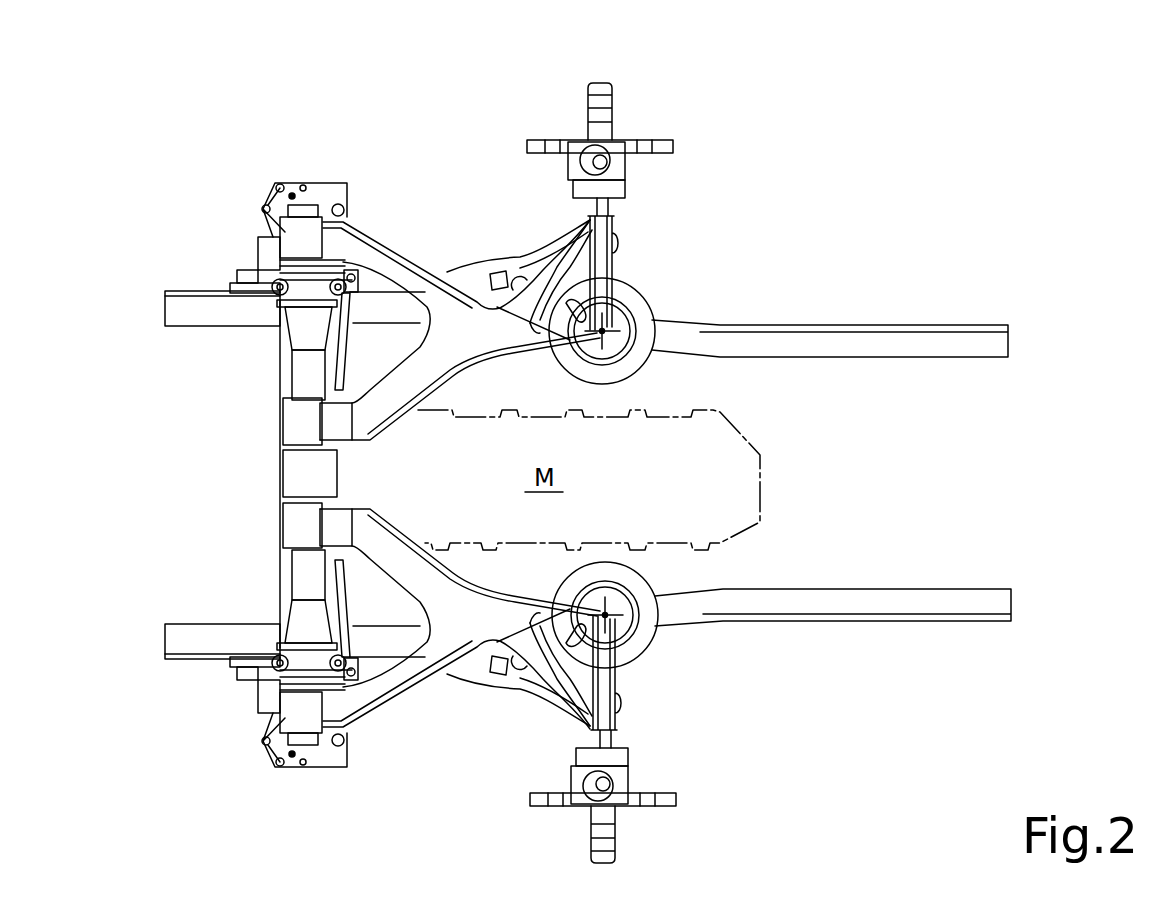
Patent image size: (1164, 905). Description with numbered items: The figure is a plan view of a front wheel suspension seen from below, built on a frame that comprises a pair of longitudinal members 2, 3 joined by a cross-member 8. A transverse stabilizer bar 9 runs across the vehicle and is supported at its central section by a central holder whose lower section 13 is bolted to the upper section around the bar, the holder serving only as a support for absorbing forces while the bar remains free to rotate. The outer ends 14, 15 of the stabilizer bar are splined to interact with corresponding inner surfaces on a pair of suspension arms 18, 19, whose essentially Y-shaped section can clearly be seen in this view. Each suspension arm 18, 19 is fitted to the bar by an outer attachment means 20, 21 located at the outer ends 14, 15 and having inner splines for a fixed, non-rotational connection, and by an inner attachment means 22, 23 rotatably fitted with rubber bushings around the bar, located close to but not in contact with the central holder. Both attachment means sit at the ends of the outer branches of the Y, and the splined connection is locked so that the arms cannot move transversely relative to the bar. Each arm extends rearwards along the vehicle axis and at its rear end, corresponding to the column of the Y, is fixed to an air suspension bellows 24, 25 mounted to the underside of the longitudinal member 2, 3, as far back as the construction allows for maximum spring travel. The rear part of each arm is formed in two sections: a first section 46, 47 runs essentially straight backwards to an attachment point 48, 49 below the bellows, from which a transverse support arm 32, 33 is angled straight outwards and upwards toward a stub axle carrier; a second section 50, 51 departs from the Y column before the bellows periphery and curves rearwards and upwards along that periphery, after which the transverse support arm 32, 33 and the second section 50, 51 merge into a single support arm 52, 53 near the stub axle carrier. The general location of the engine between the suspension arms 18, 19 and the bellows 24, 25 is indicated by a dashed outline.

The longitudinal member 2 is at (950, 600).
The longitudinal member 3 is at (948, 340).
The cross-member 8 is at (287, 358).
The transverse stabilizer bar 9 is at (293, 378).
The lower section of central holder 13 is at (293, 473).
The outer end of stabilizer bar 14 is at (307, 763).
The outer end of stabilizer bar 15 is at (293, 185).
The suspension arm 18 is at (481, 627).
The suspension arm 19 is at (481, 345).
The outer attachment means 20 is at (293, 708).
The outer attachment means 21 is at (290, 243).
The inner attachment means 22 is at (293, 523).
The inner attachment means 23 is at (293, 423).
The air suspension bellows 24 is at (650, 630).
The air suspension bellows 25 is at (650, 318).
The transverse support arm 32 is at (612, 660).
The transverse support arm 33 is at (612, 290).
The first section 46 is at (540, 607).
The first section 47 is at (543, 333).
The attachment point 48 is at (612, 640).
The attachment point 49 is at (612, 308).
The second section 50 is at (577, 687).
The second section 51 is at (573, 252).
The single support arm 52 is at (610, 757).
The single support arm 53 is at (605, 188).